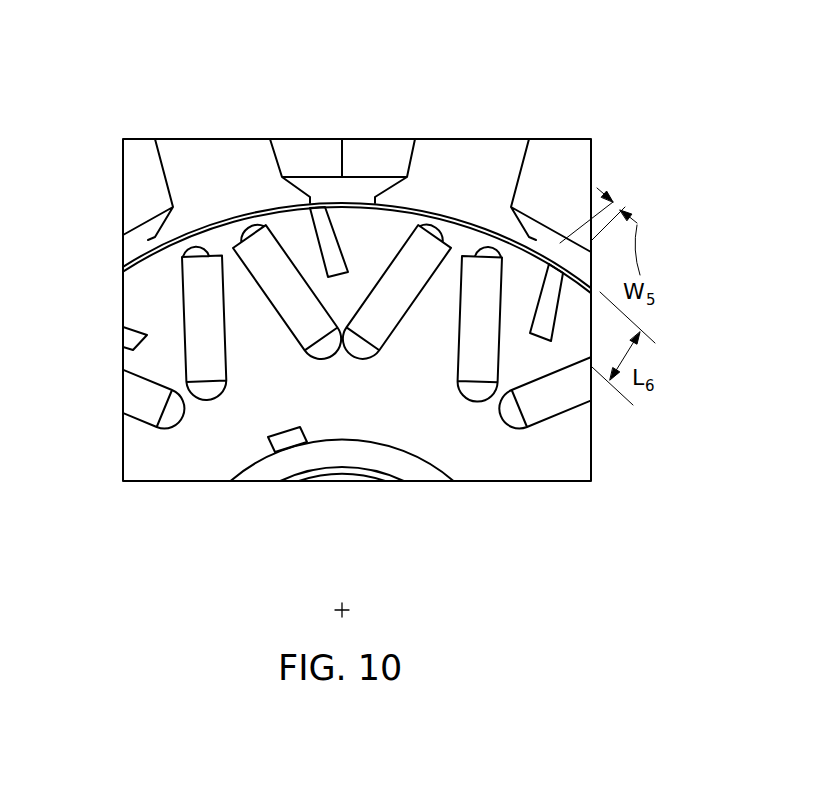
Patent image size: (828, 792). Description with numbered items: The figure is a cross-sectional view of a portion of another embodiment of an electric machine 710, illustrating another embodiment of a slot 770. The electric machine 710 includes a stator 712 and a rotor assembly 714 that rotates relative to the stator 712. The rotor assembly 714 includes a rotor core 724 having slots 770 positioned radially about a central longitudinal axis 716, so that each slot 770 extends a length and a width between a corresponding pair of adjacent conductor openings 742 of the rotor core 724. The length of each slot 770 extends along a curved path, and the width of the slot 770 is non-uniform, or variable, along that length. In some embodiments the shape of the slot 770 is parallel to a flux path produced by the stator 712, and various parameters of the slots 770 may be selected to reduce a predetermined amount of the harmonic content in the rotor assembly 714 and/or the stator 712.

The electric machine 710 is at (630, 85).
The stator 712 is at (204, 158).
The rotor assembly 714 is at (198, 498).
The central longitudinal axis 716 is at (333, 600).
The rotor core 724 is at (488, 480).
The conductor openings 742 is at (257, 228).
The slot 770 is at (332, 232).